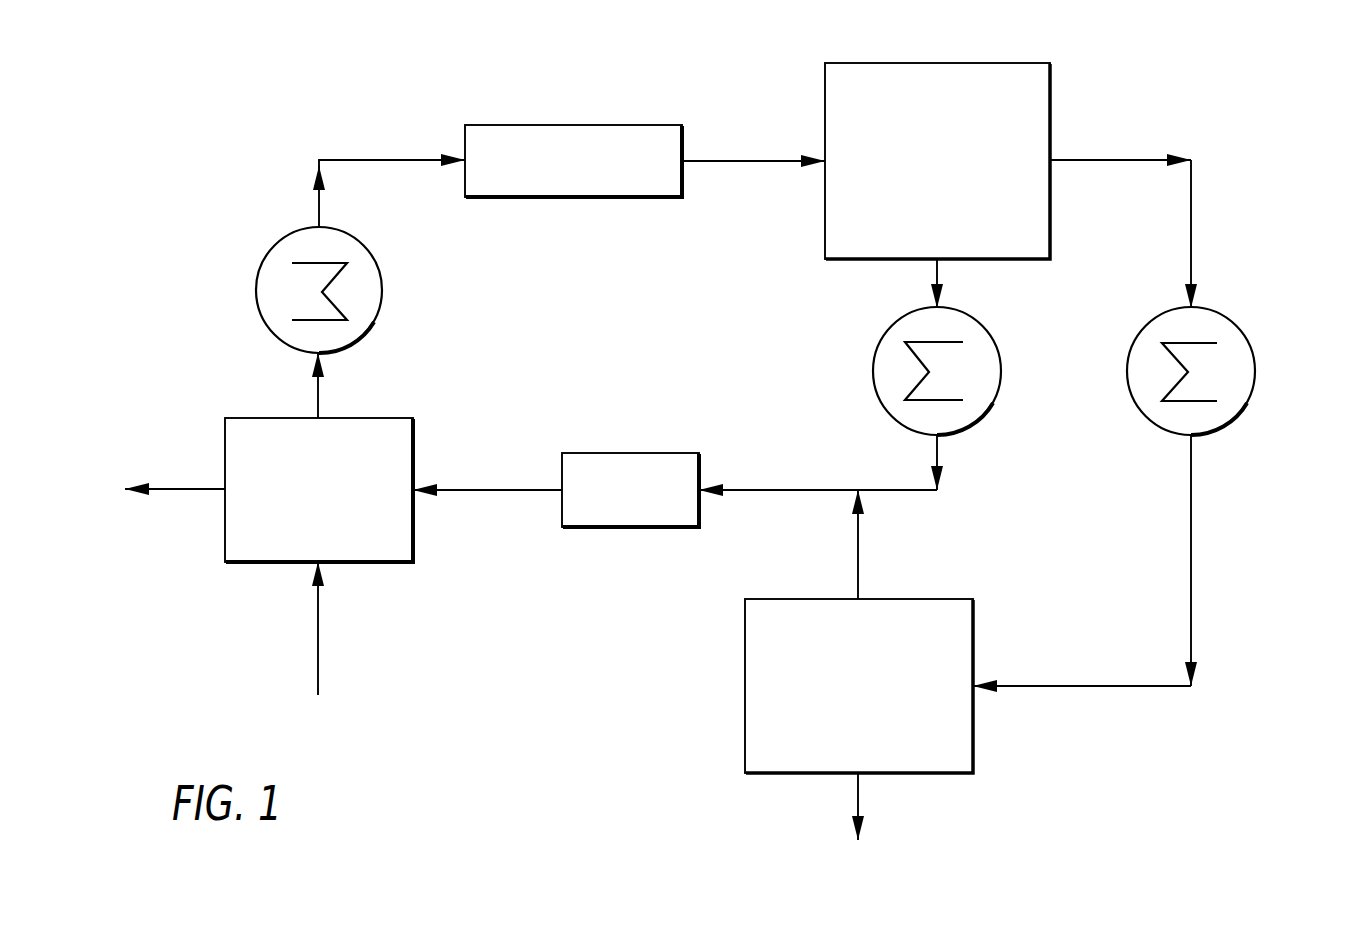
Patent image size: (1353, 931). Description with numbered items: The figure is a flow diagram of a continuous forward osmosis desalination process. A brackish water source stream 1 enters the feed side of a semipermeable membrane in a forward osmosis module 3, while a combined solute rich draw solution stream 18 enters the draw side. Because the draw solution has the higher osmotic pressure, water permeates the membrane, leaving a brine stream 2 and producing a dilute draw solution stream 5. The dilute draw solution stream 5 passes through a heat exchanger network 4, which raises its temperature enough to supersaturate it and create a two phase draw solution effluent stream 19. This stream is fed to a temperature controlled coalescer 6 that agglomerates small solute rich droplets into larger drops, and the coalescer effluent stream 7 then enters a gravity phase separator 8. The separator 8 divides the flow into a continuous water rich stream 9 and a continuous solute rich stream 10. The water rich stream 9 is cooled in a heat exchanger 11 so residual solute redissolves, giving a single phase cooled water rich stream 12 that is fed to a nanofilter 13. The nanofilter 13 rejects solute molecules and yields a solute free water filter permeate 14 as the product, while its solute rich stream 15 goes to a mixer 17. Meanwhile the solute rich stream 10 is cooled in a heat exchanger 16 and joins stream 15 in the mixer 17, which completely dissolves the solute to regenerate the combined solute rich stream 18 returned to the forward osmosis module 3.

The brackish water source stream 1 is at (318, 654).
The brine stream 2 is at (190, 489).
The forward osmosis module 3 is at (303, 502).
The heat exchanger network 4 is at (258, 272).
The dilute draw solution stream 5 is at (318, 396).
The coalescer 6 is at (558, 171).
The coalescer effluent stream 7 is at (740, 161).
The gravity phase separator 8 is at (925, 176).
The water rich stream 9 is at (1103, 160).
The solute rich stream 10 is at (937, 272).
The heat exchanger 11 is at (1250, 340).
The cooled water rich stream 12 is at (1073, 686).
The nanofilter 13 is at (847, 695).
The solute free water filter permeate 14 is at (858, 790).
The solute rich stream 15 is at (858, 552).
The heat exchanger 16 is at (873, 370).
The mixer 17 is at (614, 504).
The combined solute rich stream 18 is at (493, 490).
The two phase draw solution effluent stream 19 is at (376, 160).